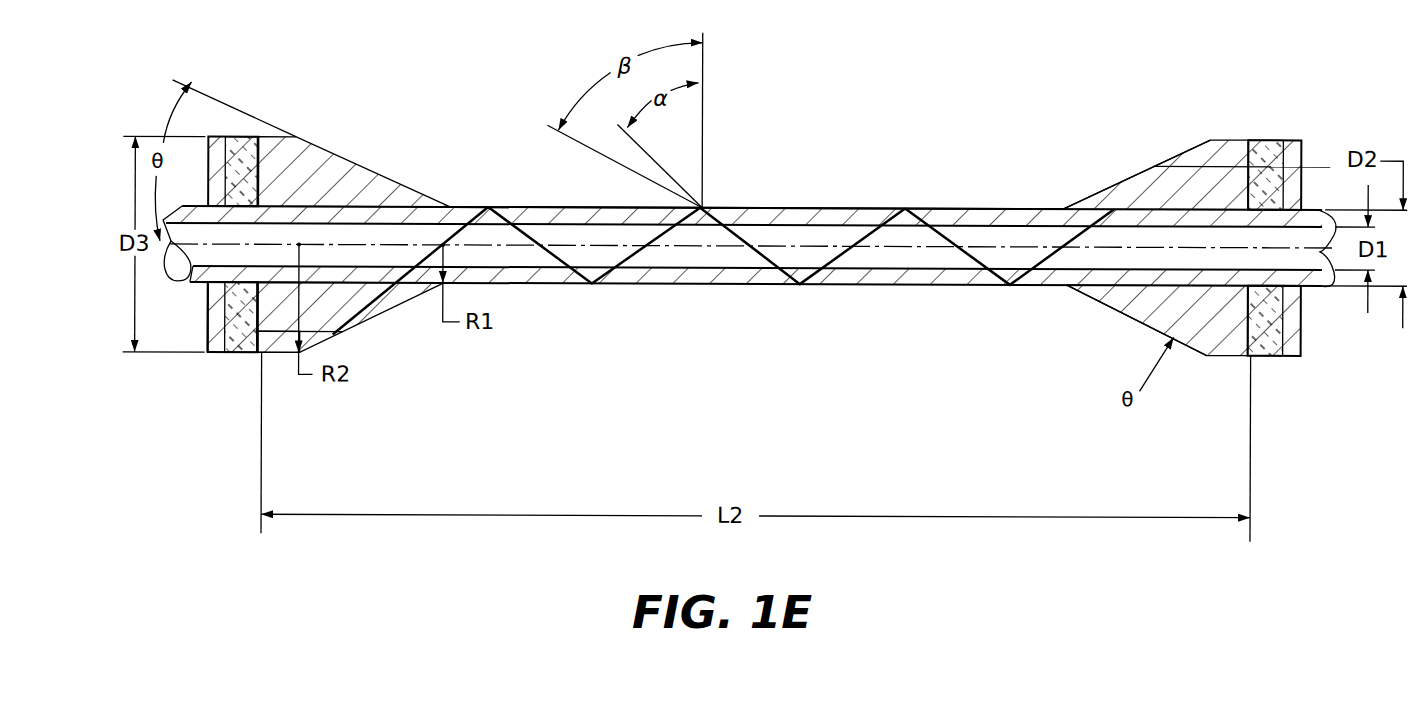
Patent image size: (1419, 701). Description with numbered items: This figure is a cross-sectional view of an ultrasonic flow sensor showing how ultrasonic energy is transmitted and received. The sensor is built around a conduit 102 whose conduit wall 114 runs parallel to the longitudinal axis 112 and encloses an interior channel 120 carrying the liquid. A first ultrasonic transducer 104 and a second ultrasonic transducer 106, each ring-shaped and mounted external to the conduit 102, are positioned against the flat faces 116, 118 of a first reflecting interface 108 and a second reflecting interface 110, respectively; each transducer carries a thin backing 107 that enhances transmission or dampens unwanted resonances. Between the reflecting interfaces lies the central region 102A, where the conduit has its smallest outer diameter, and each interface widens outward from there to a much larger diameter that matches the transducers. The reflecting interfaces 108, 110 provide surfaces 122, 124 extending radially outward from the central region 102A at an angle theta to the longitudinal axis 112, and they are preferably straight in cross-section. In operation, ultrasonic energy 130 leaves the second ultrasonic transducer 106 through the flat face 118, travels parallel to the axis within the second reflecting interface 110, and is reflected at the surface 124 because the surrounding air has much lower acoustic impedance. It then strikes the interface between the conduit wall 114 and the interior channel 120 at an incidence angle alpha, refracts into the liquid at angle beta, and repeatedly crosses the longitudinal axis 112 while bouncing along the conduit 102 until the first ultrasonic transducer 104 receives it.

The conduit 102 is at (168, 280).
The central region 102A is at (442, 388).
The first ultrasonic transducer 104 is at (1247, 138).
The second ultrasonic transducer 106 is at (250, 355).
The backing 107 is at (210, 355).
The first reflecting interface 108 is at (1117, 321).
The second reflecting interface 110 is at (362, 317).
The longitudinal axis 112 is at (830, 233).
The conduit wall 114 is at (563, 207).
The flat face 116 is at (1268, 322).
The flat face 118 is at (246, 150).
The interior channel 120 is at (1003, 240).
The surface 122 is at (1207, 134).
The surface 124 is at (310, 120).
The ultrasonic energy 130 is at (1316, 165).